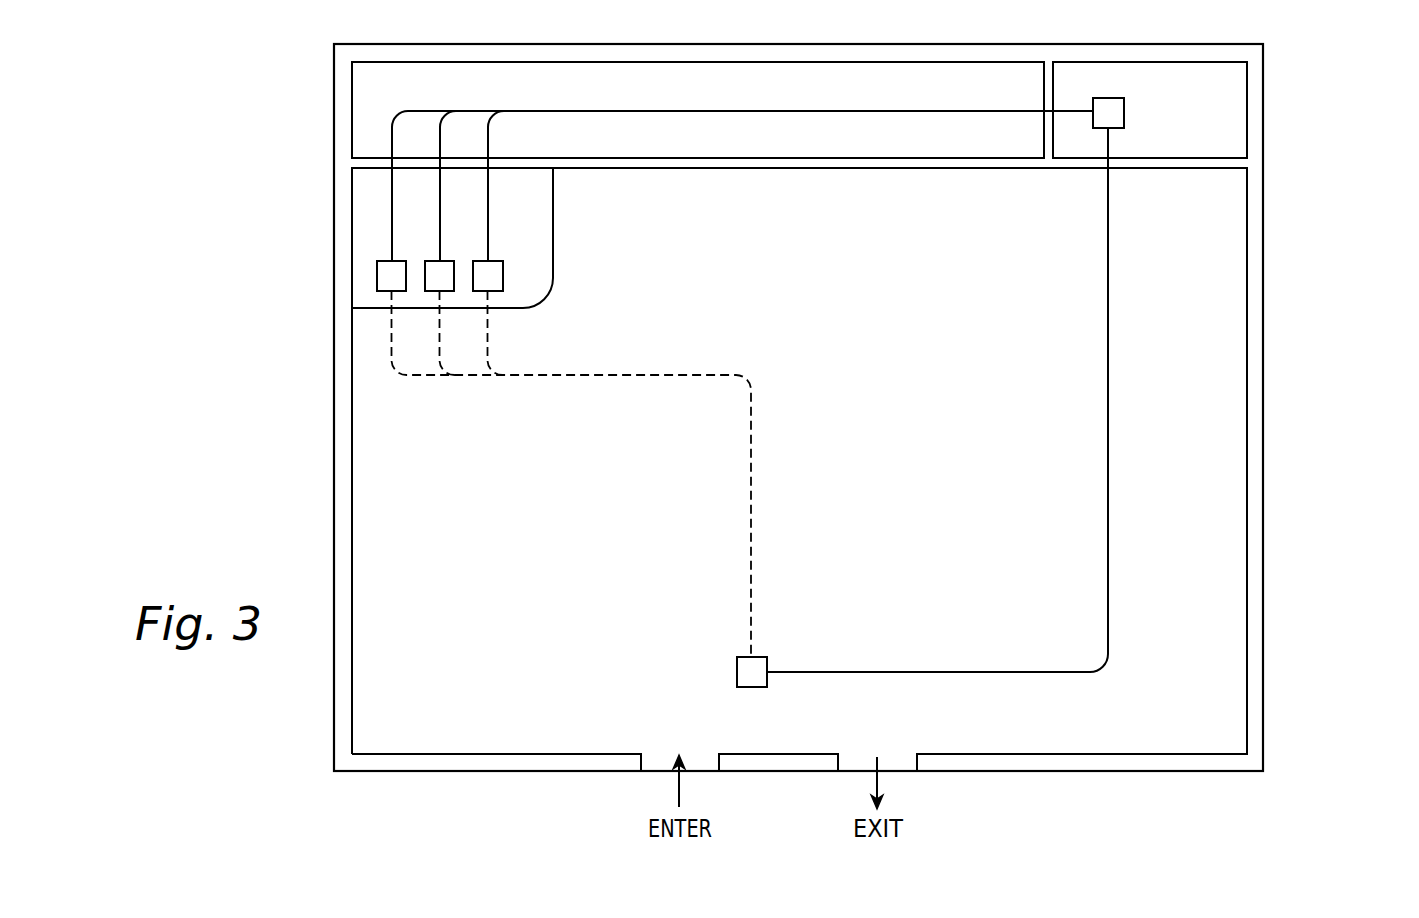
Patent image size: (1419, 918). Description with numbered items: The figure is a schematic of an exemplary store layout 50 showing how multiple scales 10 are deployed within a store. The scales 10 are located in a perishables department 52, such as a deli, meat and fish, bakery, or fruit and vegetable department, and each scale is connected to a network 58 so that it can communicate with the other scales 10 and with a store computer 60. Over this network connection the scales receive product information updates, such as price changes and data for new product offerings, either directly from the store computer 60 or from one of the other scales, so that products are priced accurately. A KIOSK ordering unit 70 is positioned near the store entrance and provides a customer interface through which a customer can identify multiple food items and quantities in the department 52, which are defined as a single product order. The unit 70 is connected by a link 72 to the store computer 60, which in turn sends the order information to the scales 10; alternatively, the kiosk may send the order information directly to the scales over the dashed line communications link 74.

The scale 10 is at (387, 275).
The store layout 50 is at (1293, 259).
The perishables department 52 is at (525, 208).
The network 58 is at (707, 111).
The store computer 60 is at (1124, 116).
The KIOSK ordering unit 70 is at (737, 672).
The link 72 is at (1109, 405).
The dashed line communications link 74 is at (752, 455).